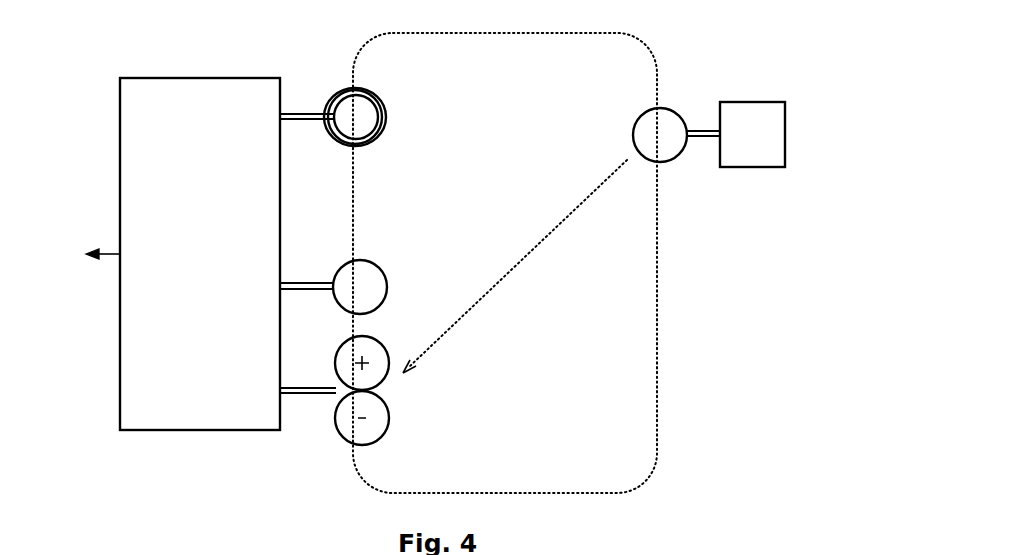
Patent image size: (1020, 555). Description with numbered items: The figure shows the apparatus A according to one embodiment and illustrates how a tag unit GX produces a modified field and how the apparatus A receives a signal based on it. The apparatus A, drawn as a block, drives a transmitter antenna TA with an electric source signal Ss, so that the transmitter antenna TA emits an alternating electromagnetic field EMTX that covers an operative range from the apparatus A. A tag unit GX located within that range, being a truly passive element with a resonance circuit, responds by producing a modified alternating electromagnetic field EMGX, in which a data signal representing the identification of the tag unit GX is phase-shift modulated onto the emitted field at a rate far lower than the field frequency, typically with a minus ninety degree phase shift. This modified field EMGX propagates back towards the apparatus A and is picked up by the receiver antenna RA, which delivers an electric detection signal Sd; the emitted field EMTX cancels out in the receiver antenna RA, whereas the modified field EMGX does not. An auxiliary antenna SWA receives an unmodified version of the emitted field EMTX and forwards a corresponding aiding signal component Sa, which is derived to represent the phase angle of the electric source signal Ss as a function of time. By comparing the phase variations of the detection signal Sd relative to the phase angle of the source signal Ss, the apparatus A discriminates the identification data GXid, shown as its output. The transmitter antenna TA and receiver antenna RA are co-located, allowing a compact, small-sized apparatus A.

The apparatus A is at (193, 78).
The electric source signal Ss is at (307, 102).
The transmitter antenna TA is at (386, 116).
The auxiliary antenna SWA is at (362, 261).
The aiding signal component Sa is at (307, 273).
The electric detection signal Sd is at (308, 377).
The receiver antenna RA is at (384, 389).
The tag unit GX is at (786, 132).
The identification data GXid is at (71, 255).
The emitted alternating electromagnetic field EMTX is at (505, 248).
The modified alternating electromagnetic field EMGX is at (515, 266).